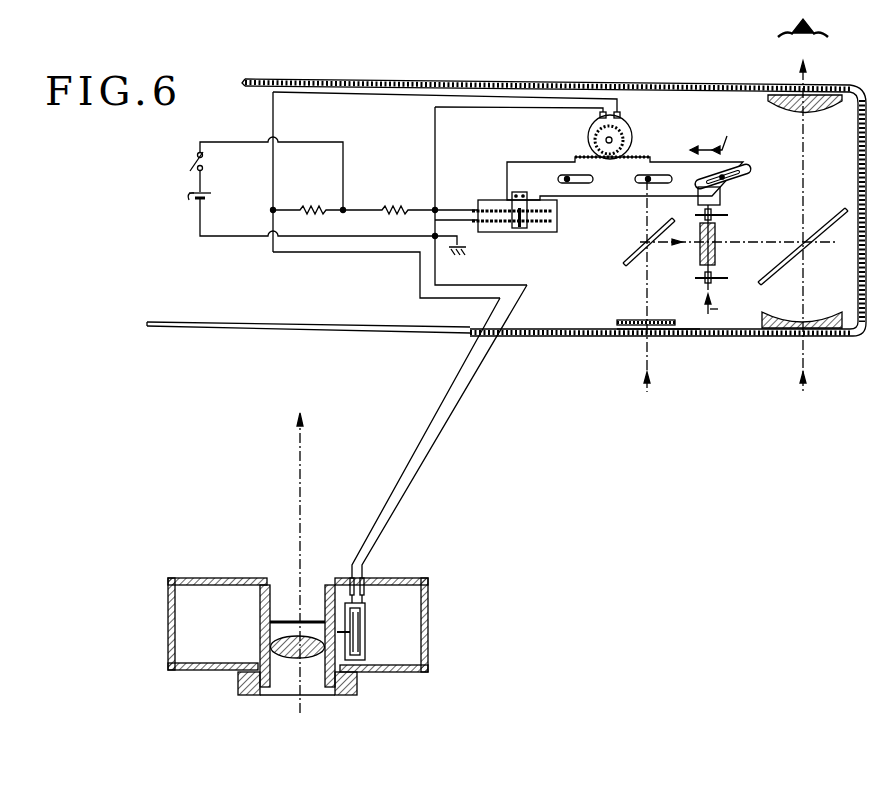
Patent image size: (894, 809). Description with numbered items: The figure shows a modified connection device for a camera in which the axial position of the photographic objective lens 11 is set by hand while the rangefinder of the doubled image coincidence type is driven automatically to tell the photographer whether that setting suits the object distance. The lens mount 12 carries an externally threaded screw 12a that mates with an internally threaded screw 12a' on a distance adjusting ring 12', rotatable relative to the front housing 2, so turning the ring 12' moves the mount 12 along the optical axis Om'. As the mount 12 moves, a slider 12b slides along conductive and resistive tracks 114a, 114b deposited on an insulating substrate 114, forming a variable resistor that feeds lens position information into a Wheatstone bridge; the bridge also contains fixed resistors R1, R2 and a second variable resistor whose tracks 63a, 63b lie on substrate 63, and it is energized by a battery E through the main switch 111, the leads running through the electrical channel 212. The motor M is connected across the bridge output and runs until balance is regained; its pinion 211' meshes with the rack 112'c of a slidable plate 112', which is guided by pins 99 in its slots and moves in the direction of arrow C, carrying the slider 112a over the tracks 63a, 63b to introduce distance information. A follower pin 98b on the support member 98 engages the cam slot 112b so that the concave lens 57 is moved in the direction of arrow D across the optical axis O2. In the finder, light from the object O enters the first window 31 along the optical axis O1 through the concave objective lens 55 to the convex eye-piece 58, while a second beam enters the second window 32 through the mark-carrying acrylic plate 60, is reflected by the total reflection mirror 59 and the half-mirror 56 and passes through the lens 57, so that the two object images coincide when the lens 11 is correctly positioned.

The main switch 111 is at (196, 159).
The battery E is at (306, 203).
The fixed resistor R1 is at (410, 196).
The fixed resistor R2 is at (308, 196).
The slidable plate 112' is at (611, 164).
The rack 112'c is at (609, 104).
The electrical motor M is at (627, 128).
The pinion 211' is at (637, 141).
The guide pins 99 is at (567, 183).
The slider 112a is at (560, 176).
The electrically insulating substrate 63 is at (540, 232).
The linear track 63a is at (490, 209).
The linear track 63b is at (496, 223).
The arrow indicating slide plate direction C is at (712, 131).
The follower pin 98b is at (722, 180).
The cam slot 112b is at (752, 170).
The support member 98 is at (722, 206).
The concave lens 57 is at (714, 234).
The arrow indicating lens direction D is at (719, 310).
The total reflection mirror 59 is at (633, 270).
The half-mirror 56 is at (815, 233).
The mark-carrying transparent plate 60 is at (668, 302).
The eye-piece 58 is at (823, 113).
The objective lens 55 is at (832, 330).
The object O is at (803, 45).
The optical axis O1 is at (806, 244).
The optical axis O2 is at (649, 299).
The first window 31 is at (782, 337).
The second window 32 is at (668, 337).
The optical axis Om' is at (304, 579).
The externally threaded screw 12a is at (230, 609).
The lens mount 12 is at (301, 661).
The internally threaded screw 12a' is at (244, 705).
The distance adjusting ring 12' is at (357, 701).
The photographic objective lens 11 is at (288, 660).
The electrical channel 212 is at (317, 620).
The front housing 2 is at (429, 630).
The electrically insulating substrate 114 is at (370, 658).
The linear track 114a is at (362, 613).
The linear track 114b is at (362, 628).
The slider 12b is at (365, 646).